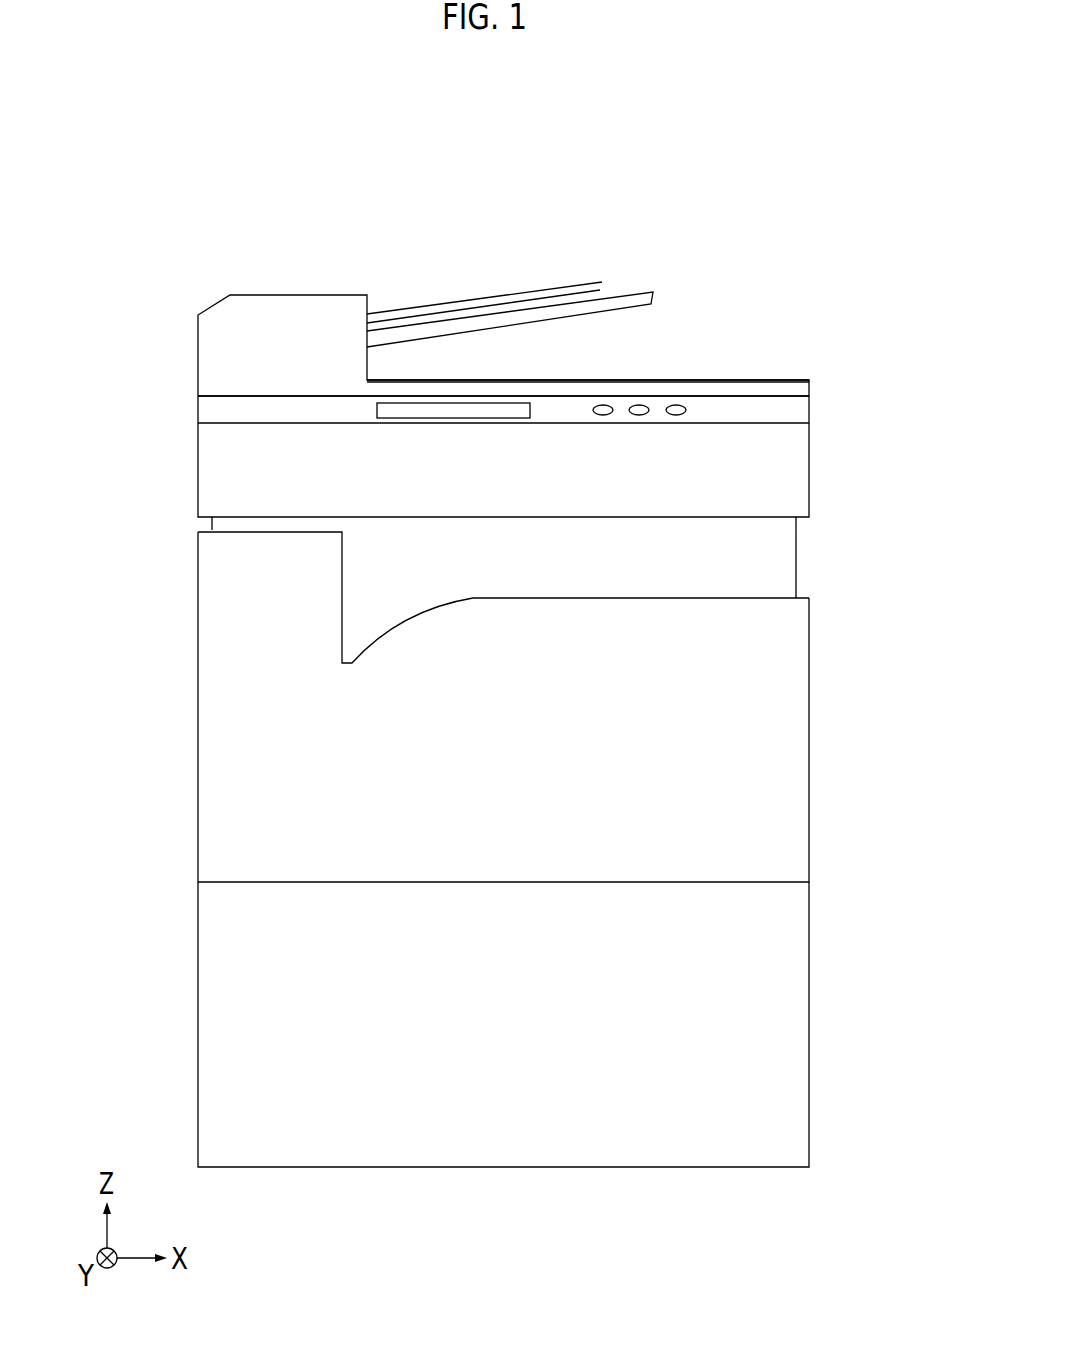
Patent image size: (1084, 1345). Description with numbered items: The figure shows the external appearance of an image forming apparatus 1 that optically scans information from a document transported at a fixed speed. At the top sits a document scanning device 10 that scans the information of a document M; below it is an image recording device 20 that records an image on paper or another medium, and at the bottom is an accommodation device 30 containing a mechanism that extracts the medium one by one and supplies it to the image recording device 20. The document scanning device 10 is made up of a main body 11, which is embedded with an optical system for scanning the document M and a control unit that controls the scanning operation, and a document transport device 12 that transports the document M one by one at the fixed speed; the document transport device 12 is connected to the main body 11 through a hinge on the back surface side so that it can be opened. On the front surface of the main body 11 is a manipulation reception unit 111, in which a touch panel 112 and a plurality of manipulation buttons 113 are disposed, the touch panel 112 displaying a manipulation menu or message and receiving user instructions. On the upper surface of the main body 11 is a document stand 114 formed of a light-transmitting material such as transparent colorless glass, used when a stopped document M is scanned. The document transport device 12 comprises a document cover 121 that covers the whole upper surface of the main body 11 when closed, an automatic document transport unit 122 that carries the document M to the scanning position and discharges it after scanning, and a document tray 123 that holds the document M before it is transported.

The image forming apparatus 1 is at (760, 162).
The document scanning device 10 is at (140, 330).
The main body 11 is at (192, 397).
The document transport device 12 is at (192, 295).
The manipulation reception unit 111 is at (810, 410).
The touch panel 112 is at (507, 403).
The manipulation buttons 113 is at (638, 392).
The document stand 114 is at (818, 392).
The document cover 121 is at (730, 388).
The automatic document transport unit 122 is at (280, 295).
The document tray 123 is at (629, 292).
The document M is at (463, 300).
The image recording device 20 is at (188, 616).
The accommodation device 30 is at (188, 926).